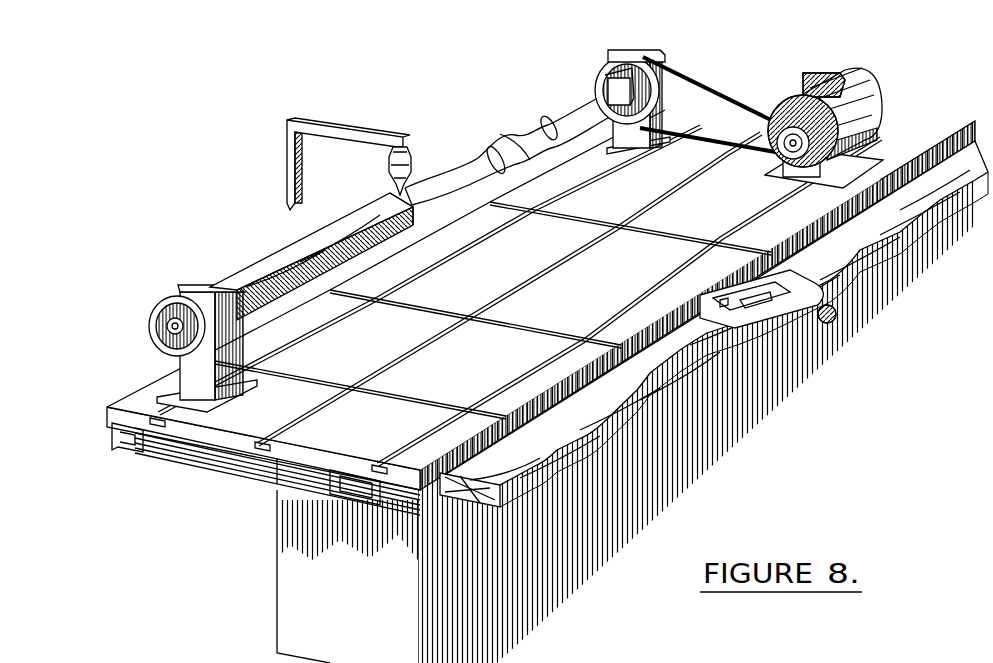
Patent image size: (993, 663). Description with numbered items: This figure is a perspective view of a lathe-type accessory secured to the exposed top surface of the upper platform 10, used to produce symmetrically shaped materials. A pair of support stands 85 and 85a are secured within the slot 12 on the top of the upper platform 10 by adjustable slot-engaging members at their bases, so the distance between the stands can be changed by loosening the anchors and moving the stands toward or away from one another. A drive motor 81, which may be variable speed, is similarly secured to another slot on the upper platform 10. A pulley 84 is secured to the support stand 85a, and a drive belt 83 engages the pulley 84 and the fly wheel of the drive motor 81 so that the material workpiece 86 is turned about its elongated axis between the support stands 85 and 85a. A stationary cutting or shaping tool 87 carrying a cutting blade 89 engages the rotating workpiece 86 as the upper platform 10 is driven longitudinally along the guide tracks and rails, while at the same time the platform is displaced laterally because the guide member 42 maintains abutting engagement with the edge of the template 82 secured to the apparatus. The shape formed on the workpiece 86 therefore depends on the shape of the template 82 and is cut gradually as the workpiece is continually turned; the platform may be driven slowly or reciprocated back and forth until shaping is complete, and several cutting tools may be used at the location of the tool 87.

The upper platform 10 is at (307, 437).
The slot 12 is at (143, 445).
The guide member 42 is at (815, 332).
The drive motor 81 is at (873, 100).
The template 82 is at (707, 333).
The drive belt 83 is at (703, 88).
The pulley 84 is at (603, 68).
The support stand 85 is at (183, 370).
The support stand 85a is at (637, 53).
The material workpiece 86 is at (550, 125).
The stationary cutting or shaping tool 87 is at (365, 130).
The cutting blade 89 is at (410, 188).